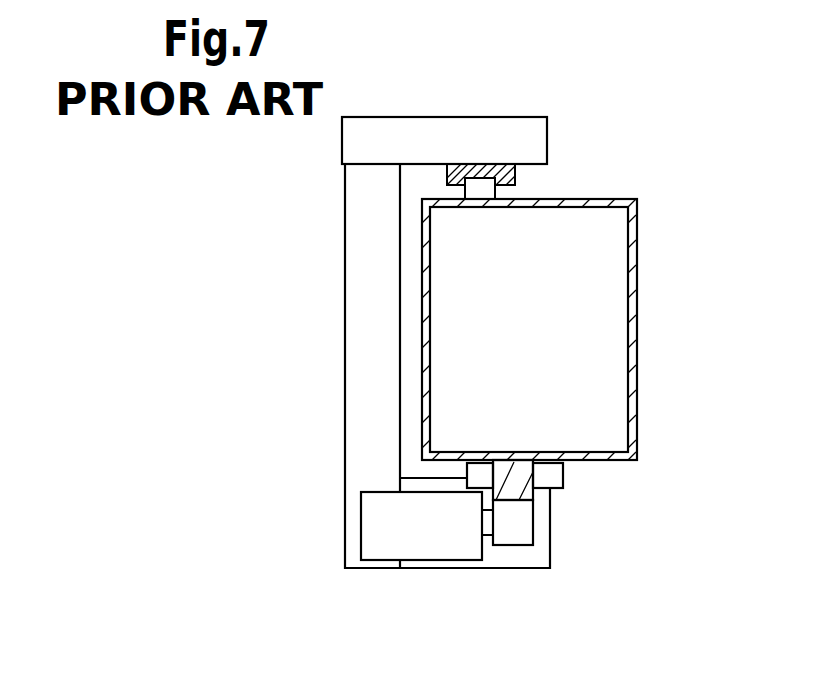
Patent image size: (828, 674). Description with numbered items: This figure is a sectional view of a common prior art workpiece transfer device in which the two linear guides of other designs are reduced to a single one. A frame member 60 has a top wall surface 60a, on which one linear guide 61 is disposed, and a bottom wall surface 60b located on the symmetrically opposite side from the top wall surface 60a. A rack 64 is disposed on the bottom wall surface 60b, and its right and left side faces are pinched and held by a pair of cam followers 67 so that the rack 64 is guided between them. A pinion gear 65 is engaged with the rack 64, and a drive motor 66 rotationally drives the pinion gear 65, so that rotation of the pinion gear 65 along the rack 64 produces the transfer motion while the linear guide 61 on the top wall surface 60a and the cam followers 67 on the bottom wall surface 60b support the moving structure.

The frame member 60 is at (575, 313).
The top wall surface 60a is at (630, 198).
The bottom wall surface 60b is at (622, 459).
The linear guide 61 is at (526, 182).
The rack 64 is at (518, 472).
The pinion gear 65 is at (523, 545).
The drive motor 66 is at (445, 568).
The cam followers 67 is at (458, 462).